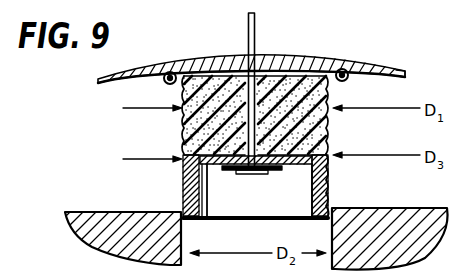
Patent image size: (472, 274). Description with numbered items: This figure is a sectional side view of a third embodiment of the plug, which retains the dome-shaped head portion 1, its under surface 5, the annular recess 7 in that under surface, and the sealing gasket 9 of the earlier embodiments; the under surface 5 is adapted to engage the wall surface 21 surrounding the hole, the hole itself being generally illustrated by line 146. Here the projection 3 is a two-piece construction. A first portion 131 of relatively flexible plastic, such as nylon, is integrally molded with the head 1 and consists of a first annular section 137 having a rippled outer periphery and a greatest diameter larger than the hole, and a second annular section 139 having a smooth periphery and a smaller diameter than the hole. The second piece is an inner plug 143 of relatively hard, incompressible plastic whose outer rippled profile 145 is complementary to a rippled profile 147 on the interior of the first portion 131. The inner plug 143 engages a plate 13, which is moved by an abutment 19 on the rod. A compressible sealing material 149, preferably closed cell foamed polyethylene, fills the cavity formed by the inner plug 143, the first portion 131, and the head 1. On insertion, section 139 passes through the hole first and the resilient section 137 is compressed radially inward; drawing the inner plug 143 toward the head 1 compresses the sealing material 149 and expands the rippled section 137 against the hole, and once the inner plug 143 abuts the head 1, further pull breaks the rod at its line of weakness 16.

The dome-shaped head portion 1 is at (220, 64).
The projection 3 is at (114, 223).
The under surface 5 is at (394, 77).
The annular recess 7 is at (170, 71).
The sealing gasket 9 is at (344, 68).
The plate 13 is at (273, 175).
The line of weakness 16 is at (265, 89).
The abutment 19 is at (242, 176).
The wall surface 21 is at (436, 208).
The first portion 131 is at (336, 128).
The first annular section 137 is at (336, 98).
The second annular section 139 is at (330, 168).
The inner plug 143 is at (330, 194).
The rippled profile 145 is at (182, 187).
The hole line 146 is at (330, 233).
The rippled profile 147 is at (180, 129).
The compressible sealing material 149 is at (300, 60).